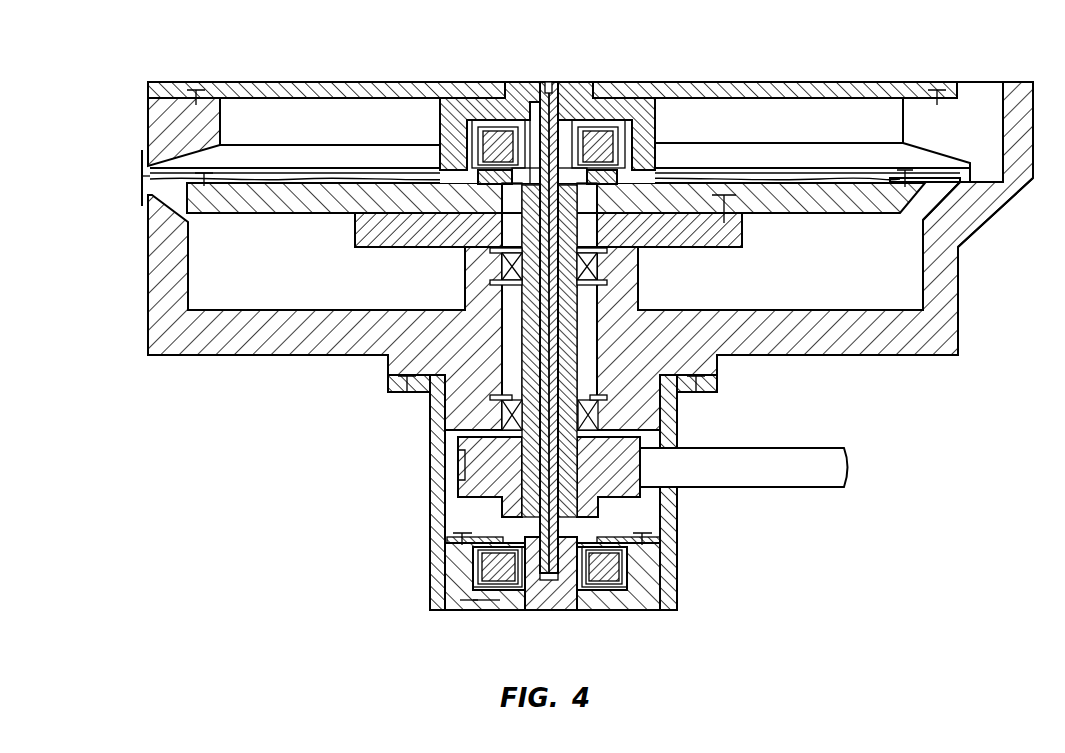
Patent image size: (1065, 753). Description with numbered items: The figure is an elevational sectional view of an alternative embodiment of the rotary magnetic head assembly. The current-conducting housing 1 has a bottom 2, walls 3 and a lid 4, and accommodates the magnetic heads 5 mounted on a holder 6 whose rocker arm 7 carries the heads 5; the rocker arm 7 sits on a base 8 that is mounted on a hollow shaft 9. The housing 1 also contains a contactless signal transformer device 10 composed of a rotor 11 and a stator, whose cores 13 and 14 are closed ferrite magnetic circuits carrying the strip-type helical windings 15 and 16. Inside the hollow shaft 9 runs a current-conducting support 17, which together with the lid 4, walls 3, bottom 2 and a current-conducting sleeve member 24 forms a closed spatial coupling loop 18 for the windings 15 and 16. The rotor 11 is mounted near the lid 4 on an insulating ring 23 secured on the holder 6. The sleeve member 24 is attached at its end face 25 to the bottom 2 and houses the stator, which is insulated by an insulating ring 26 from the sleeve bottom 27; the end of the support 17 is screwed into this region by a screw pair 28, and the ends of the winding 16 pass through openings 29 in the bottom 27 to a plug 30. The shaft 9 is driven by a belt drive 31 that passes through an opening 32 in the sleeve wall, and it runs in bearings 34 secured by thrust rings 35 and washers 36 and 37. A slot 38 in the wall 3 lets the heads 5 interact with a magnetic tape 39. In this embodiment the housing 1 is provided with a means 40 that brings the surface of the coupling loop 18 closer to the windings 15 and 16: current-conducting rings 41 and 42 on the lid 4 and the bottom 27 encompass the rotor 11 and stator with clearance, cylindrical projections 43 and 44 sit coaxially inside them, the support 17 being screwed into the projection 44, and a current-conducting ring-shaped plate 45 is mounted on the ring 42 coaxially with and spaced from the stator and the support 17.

The current-conducting housing 1 is at (958, 284).
The bottom 2 is at (862, 343).
The walls 3 is at (988, 208).
The lid 4 is at (848, 88).
The magnetic heads 5 is at (194, 178).
The holder 6 is at (850, 216).
The rocker arm 7 is at (880, 205).
The base 8 is at (717, 233).
The hollow shaft 9 is at (580, 240).
The contactless signal transformer device 10 is at (474, 157).
The rotor 11 is at (628, 152).
The core 13 is at (522, 156).
The core 14 is at (617, 570).
The winding 15 is at (612, 140).
The winding 16 is at (643, 556).
The current-conducting support 17 is at (548, 328).
The closed spatial coupling loop 18 is at (266, 361).
The insulating ring 23 is at (726, 142).
The current-conducting sleeve member 24 is at (431, 489).
The end face 25 is at (717, 392).
The insulating ring 26 is at (633, 610).
The bottom 27 is at (508, 610).
The screw pair 28 is at (557, 585).
The openings 29 is at (496, 610).
The plug 30 is at (478, 610).
The belt drive 31 is at (820, 460).
The opening 32 is at (672, 508).
The bearings 34 is at (498, 267).
The thrust rings 35 is at (490, 284).
The washer 36 is at (498, 280).
The washer 37 is at (462, 442).
The slot 38 is at (142, 192).
The magnetic tape 39 is at (142, 162).
The means for bringing the coupling loop surface closer to the windings 40 is at (438, 133).
The current-conducting ring 41 is at (455, 137).
The current-conducting ring 42 is at (440, 566).
The cylindrical projection 43 is at (533, 137).
The cylindrical projection 44 is at (578, 590).
The current-conducting ring-shaped plate 45 is at (447, 541).